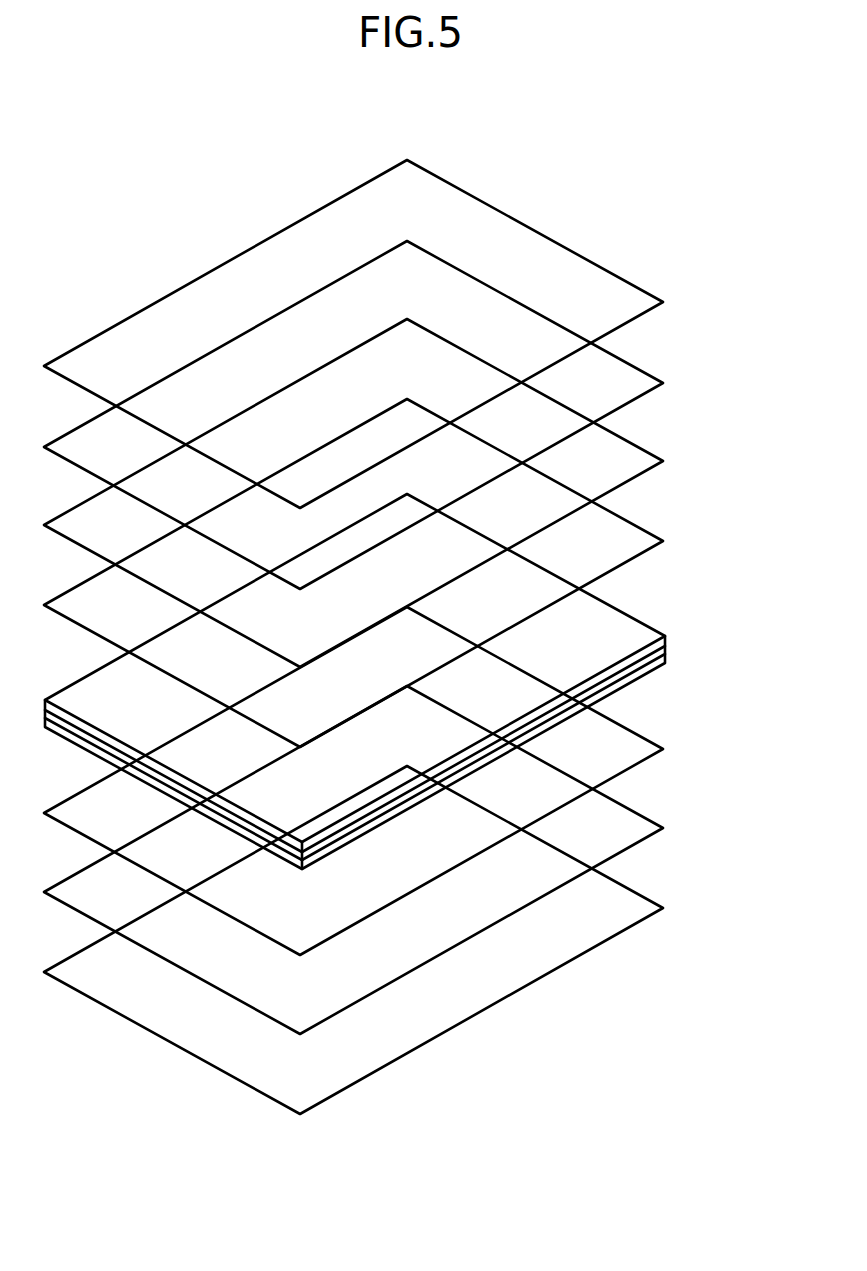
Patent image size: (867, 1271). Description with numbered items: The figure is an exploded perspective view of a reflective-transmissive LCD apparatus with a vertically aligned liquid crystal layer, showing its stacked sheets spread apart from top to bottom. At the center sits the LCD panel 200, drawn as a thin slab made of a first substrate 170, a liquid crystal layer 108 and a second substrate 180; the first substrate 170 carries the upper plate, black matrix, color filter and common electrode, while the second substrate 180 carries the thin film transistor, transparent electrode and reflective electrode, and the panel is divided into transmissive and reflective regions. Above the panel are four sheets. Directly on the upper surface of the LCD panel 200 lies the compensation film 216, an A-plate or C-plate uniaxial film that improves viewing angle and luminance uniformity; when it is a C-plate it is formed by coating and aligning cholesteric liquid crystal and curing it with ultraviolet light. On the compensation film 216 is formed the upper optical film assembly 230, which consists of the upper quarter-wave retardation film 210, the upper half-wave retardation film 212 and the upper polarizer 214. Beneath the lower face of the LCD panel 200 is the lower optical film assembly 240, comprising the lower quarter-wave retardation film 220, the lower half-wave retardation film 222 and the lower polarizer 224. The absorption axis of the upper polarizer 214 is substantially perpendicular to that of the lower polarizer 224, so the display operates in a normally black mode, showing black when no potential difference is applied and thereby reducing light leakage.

The upper polarizer 214 is at (643, 306).
The upper λ/2 retardation film 212 is at (643, 387).
The upper λ/4 retardation film 210 is at (643, 465).
The compensation film 216 is at (386, 573).
The upper optical film assembly 230 is at (417, 453).
The first substrate 170 is at (666, 638).
The liquid crystal layer 108 is at (666, 648).
The second substrate 180 is at (391, 761).
The LCD panel 200 is at (422, 681).
The lower λ/4 retardation film 220 is at (643, 753).
The lower λ/2 retardation film 222 is at (643, 832).
The lower polarizer 224 is at (386, 940).
The lower optical film assembly 240 is at (420, 860).